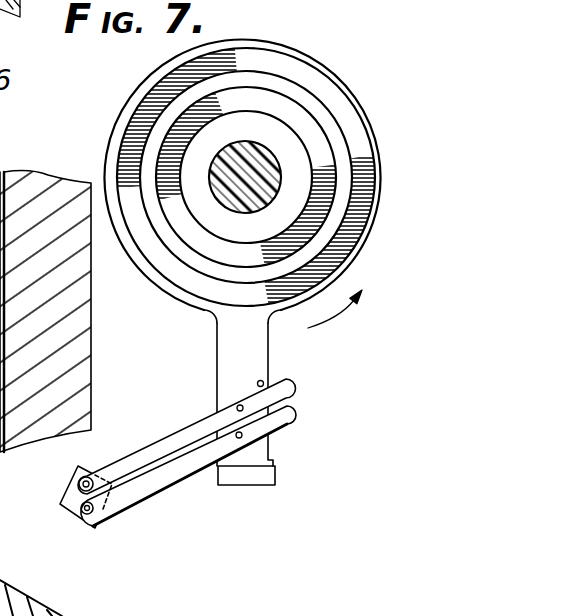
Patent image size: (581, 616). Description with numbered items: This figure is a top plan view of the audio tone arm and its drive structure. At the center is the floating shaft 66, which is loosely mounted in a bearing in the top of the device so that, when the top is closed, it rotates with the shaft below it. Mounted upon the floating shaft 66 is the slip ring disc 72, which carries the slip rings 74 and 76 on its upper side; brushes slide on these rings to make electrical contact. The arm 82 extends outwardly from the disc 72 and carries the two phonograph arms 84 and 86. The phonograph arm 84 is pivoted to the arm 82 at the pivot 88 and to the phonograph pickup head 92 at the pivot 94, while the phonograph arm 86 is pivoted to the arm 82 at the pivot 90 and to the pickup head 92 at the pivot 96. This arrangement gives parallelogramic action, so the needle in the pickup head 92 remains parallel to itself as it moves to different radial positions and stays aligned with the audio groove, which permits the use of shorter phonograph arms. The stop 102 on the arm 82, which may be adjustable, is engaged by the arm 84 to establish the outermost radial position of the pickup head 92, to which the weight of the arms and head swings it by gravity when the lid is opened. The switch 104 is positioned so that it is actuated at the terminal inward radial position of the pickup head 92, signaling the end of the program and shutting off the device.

The floating shaft 66 is at (253, 125).
The slip ring disc 72 is at (357, 95).
The slip ring 74 is at (356, 136).
The slip ring 76 is at (305, 223).
The arm 82 is at (260, 347).
The phonograph arm 84 is at (192, 430).
The phonograph arm 86 is at (183, 465).
The pivot 88 is at (237, 407).
The pivot 90 is at (242, 436).
The phonograph pickup head 92 is at (60, 505).
The pivot 94 is at (78, 485).
The pivot 96 is at (84, 520).
The stop 102 is at (258, 383).
The switch 104 is at (256, 478).